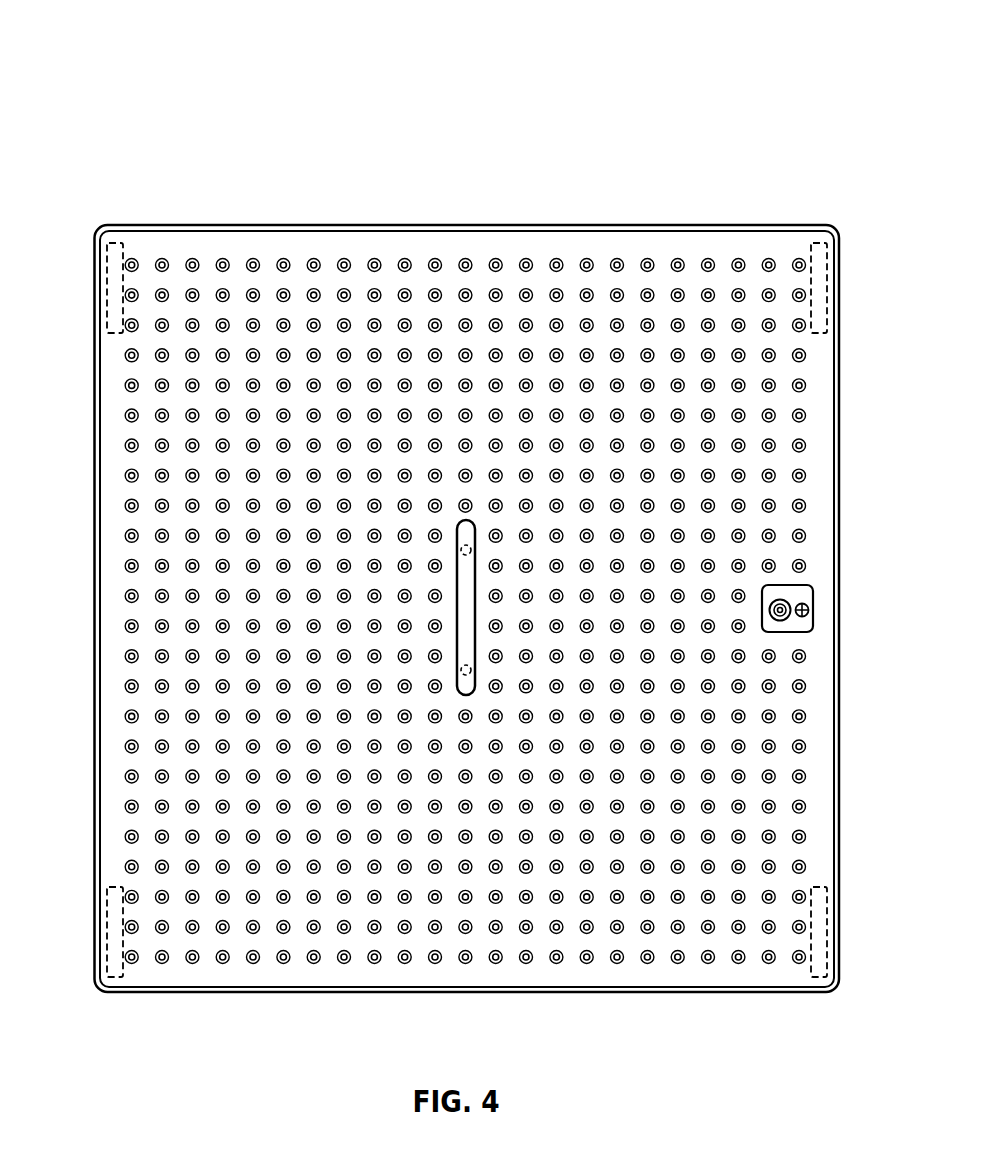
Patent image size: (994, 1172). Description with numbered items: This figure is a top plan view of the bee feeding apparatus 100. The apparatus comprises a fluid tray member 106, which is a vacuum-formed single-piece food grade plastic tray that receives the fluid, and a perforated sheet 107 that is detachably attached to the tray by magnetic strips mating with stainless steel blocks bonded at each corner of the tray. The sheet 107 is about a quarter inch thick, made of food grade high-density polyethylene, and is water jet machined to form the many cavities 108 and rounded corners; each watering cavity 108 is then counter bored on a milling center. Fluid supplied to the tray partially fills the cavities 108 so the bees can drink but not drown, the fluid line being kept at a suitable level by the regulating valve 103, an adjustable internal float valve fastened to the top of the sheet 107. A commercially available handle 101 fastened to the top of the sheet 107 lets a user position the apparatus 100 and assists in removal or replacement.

The bee feeding apparatus 100 is at (385, 85).
The handle 101 is at (476, 566).
The regulating valve 103 is at (788, 600).
The fluid tray member 106 is at (93, 408).
The sheet 107 is at (115, 523).
The cavities 108 is at (253, 265).